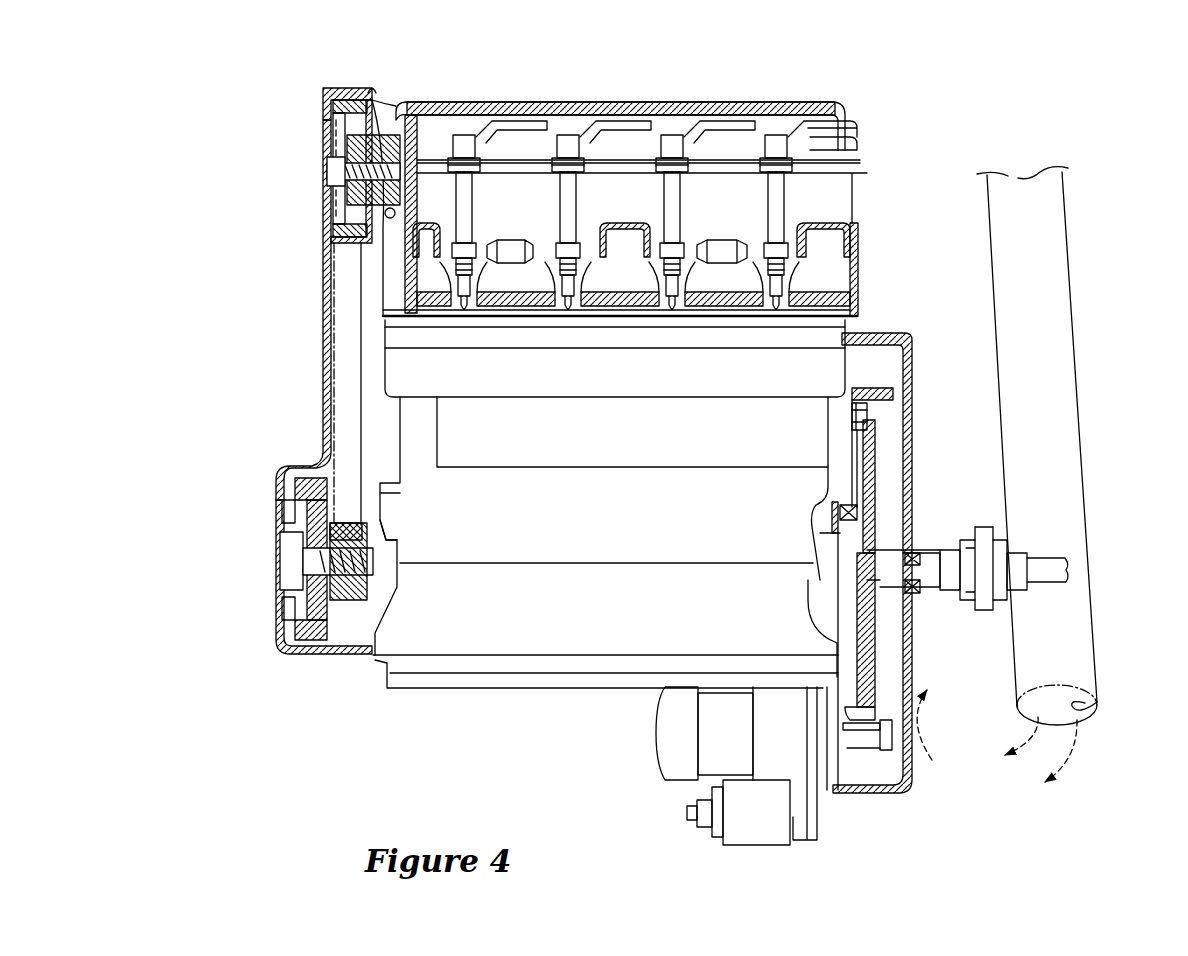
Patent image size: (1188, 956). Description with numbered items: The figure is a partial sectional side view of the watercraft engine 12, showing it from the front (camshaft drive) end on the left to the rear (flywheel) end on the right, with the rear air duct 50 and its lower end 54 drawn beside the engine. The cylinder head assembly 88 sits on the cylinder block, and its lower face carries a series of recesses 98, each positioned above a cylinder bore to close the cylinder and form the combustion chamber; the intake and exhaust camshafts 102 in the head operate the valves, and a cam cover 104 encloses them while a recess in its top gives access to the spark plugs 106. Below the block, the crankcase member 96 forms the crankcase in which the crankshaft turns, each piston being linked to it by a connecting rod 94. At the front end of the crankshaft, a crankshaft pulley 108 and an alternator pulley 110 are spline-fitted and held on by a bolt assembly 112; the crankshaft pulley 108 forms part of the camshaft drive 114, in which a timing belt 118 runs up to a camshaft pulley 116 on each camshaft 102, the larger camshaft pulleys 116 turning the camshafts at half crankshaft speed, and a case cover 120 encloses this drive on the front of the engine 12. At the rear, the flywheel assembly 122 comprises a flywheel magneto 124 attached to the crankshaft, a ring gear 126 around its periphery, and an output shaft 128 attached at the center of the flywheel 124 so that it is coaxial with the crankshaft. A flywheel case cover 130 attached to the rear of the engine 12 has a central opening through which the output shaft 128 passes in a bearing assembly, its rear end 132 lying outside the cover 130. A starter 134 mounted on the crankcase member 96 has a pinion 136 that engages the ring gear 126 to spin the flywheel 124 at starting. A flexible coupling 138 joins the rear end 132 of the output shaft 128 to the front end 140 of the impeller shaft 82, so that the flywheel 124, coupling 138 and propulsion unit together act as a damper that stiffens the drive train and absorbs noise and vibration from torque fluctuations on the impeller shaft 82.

The engine 12 is at (930, 135).
The rear air duct 50 is at (1075, 337).
The lower end 54 is at (1097, 702).
The impeller shaft 82 is at (1043, 548).
The cylinder head assembly 88 is at (858, 286).
The connecting rod 94 is at (390, 533).
The crankcase member 96 is at (537, 637).
The recess 98 is at (655, 312).
The intake and exhaust camshafts 102 is at (406, 104).
The cam cover 104 is at (845, 102).
The spark plugs 106 is at (472, 320).
The crankshaft pulley 108 is at (343, 605).
The alternator pulley 110 is at (284, 655).
The bolt assembly 112 is at (322, 551).
The camshaft drive 114 is at (378, 582).
The camshaft pulley 116 is at (323, 138).
The timing belt 118 is at (325, 343).
The case cover 120 is at (323, 267).
The flywheel assembly 122 is at (915, 378).
The flywheel magneto 124 is at (878, 458).
The ring gear 126 is at (867, 418).
The output shaft 128 is at (892, 585).
The flywheel case cover 130 is at (908, 693).
The rear end 132 is at (927, 553).
The starter 134 is at (660, 727).
The pinion 136 is at (870, 800).
The flexible coupling 138 is at (1000, 526).
The front end 140 is at (1050, 588).